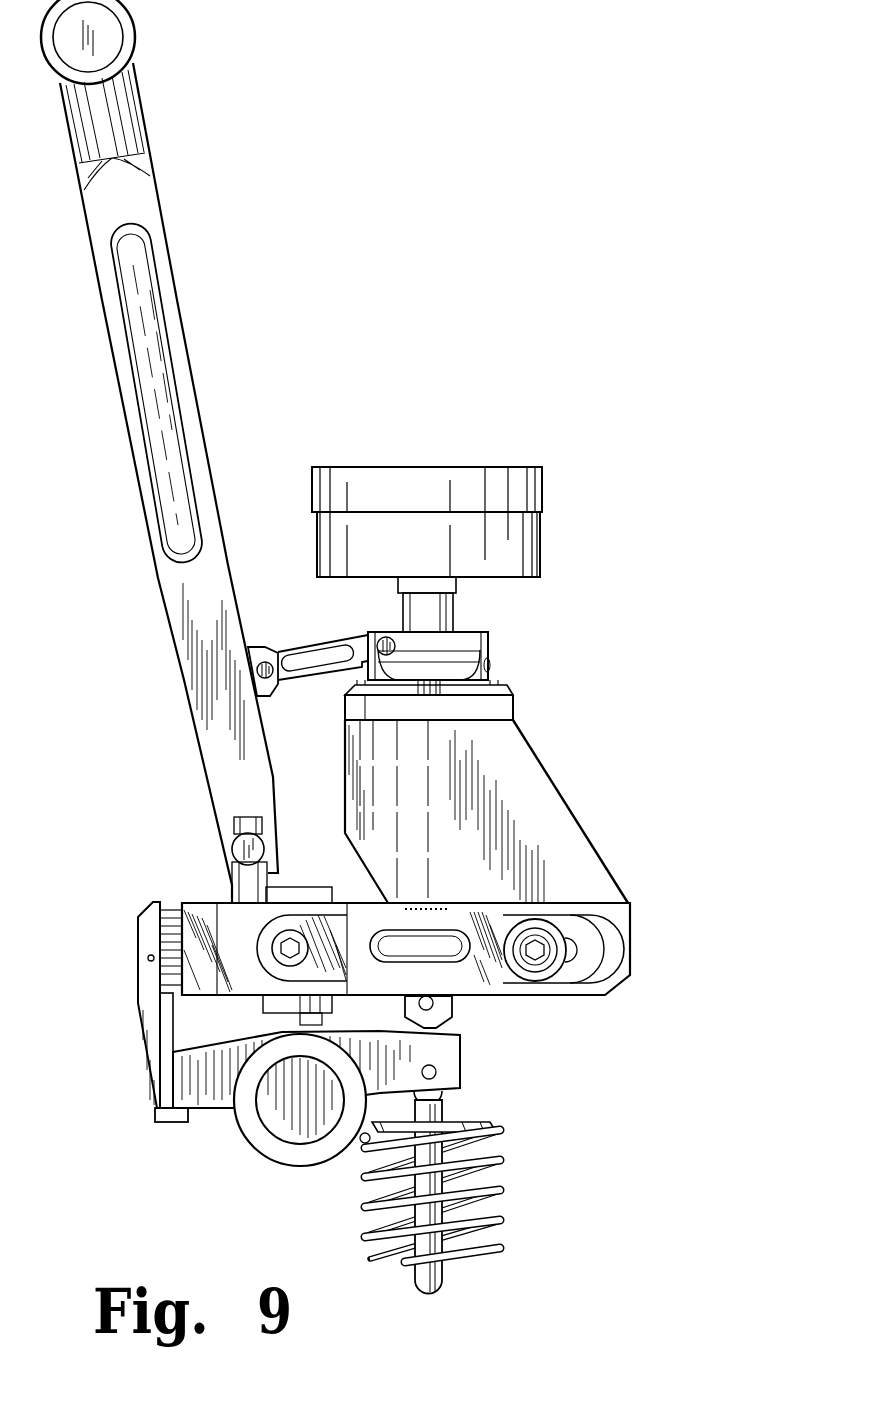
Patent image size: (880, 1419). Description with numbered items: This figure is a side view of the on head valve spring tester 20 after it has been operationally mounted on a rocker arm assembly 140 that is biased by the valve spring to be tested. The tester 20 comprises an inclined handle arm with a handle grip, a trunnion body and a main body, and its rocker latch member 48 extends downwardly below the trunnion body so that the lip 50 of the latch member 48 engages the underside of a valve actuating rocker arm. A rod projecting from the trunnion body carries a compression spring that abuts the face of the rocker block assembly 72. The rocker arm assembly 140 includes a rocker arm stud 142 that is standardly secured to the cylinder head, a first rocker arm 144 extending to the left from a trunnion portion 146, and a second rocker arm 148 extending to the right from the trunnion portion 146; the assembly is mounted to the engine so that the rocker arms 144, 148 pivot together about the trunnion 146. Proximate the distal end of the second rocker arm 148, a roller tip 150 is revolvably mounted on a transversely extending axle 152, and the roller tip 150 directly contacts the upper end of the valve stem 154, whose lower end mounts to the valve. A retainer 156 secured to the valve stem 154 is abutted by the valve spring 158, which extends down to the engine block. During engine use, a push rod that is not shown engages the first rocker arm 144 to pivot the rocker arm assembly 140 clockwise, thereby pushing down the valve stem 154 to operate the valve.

The on head valve spring tester 20 is at (588, 634).
The rocker latch member 48 is at (150, 962).
The lip 50 is at (175, 1122).
The rocker block assembly 72 is at (455, 1002).
The rocker arm assembly 140 is at (343, 1129).
The rocker arm stud 142 is at (300, 890).
The first rocker arm 144 is at (178, 1095).
The trunnion portion 146 is at (292, 1128).
The second rocker arm 148 is at (428, 1047).
The roller tip 150 is at (444, 1095).
The axle 152 is at (436, 1072).
The valve stem 154 is at (445, 1107).
The retainer 156 is at (490, 1125).
The valve spring 158 is at (477, 1206).